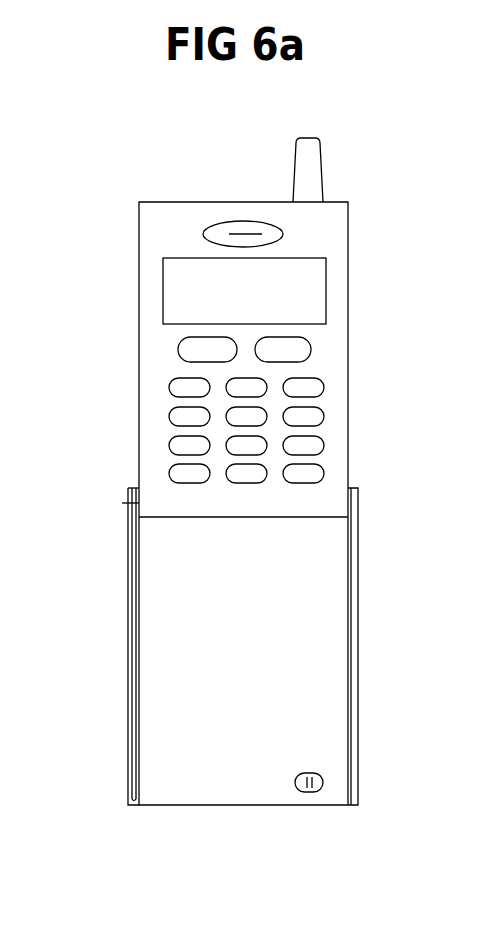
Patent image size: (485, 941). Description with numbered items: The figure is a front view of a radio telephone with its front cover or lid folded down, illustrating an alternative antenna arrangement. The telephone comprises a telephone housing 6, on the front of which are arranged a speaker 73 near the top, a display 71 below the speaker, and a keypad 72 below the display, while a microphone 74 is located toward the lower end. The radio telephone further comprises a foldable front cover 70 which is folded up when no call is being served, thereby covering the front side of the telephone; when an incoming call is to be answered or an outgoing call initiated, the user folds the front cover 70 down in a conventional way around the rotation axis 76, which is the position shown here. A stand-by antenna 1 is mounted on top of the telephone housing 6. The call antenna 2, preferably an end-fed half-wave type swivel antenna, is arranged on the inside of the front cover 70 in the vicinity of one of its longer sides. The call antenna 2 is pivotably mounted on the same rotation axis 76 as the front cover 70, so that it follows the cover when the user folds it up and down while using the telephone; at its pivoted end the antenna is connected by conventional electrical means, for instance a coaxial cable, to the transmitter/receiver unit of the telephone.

The stand-by antenna 1 is at (305, 173).
The call antenna 2 is at (130, 670).
The telephone housing 6 is at (337, 232).
The front cover 70 is at (258, 570).
The display 71 is at (308, 292).
The keypad 72 is at (307, 417).
The speaker 73 is at (227, 227).
The microphone 74 is at (318, 783).
The rotation axis 76 is at (122, 503).